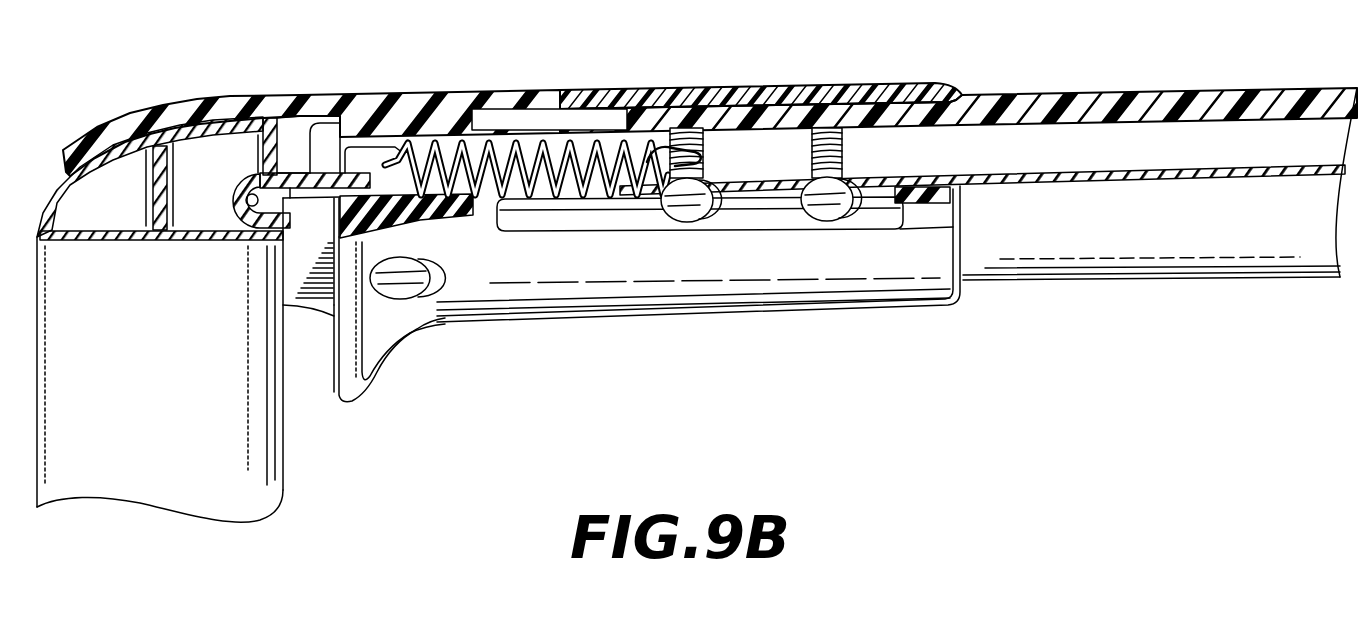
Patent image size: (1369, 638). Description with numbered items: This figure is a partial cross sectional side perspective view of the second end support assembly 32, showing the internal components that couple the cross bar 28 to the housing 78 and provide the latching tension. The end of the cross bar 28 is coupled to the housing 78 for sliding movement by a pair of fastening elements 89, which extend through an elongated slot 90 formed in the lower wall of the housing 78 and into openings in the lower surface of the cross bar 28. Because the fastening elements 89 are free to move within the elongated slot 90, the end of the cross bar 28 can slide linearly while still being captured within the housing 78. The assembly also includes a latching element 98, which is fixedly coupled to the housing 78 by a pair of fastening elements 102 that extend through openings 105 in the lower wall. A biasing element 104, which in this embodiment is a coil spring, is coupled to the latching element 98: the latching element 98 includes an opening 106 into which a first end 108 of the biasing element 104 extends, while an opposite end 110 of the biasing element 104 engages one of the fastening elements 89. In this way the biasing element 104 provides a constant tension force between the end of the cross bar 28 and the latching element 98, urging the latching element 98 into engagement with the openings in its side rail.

The cross bar 28 is at (1208, 86).
The second end support assembly 32 is at (901, 63).
The housing 78 is at (819, 85).
The fastening elements 89 is at (684, 214).
The elongated slot 90 is at (580, 212).
The latching element 98 is at (320, 248).
The fastening elements 102 is at (422, 298).
The biasing element 104 is at (567, 130).
The openings 105 is at (380, 340).
The opening 106 is at (312, 143).
The first end 108 is at (373, 153).
The opposite end 110 is at (670, 146).